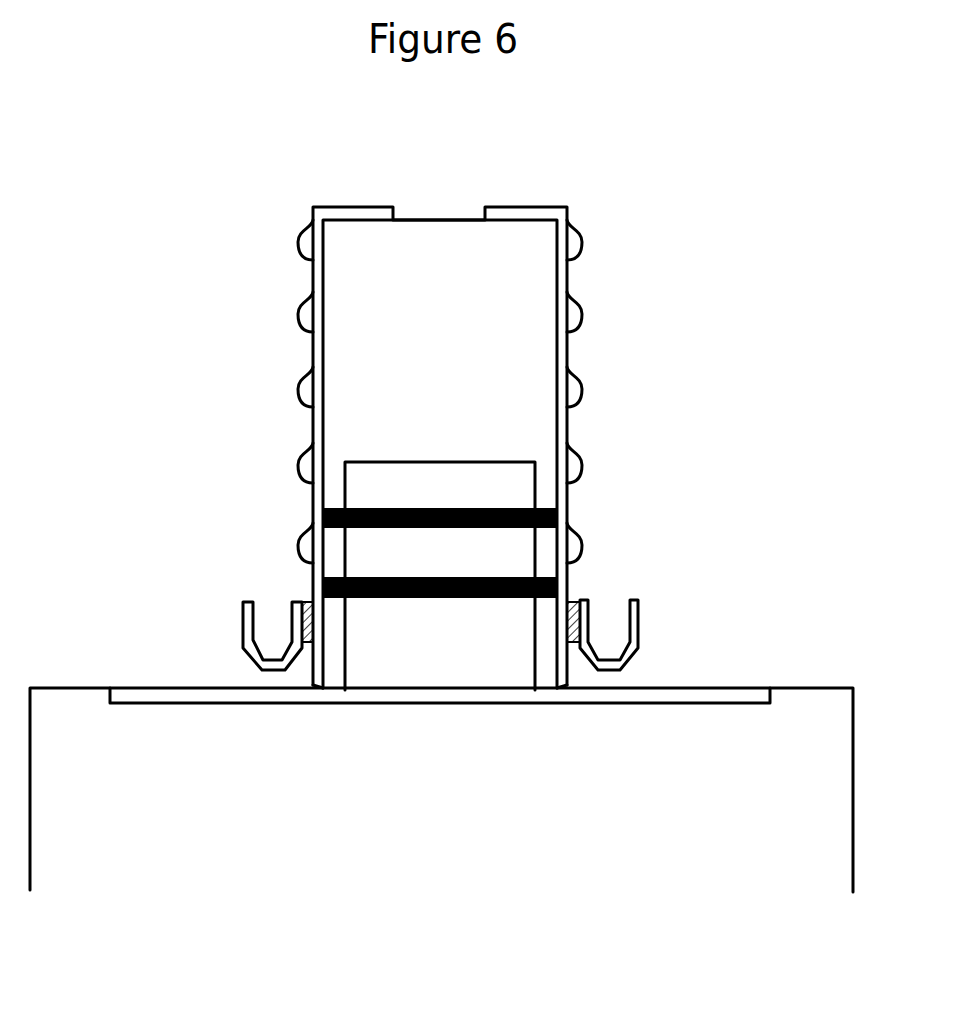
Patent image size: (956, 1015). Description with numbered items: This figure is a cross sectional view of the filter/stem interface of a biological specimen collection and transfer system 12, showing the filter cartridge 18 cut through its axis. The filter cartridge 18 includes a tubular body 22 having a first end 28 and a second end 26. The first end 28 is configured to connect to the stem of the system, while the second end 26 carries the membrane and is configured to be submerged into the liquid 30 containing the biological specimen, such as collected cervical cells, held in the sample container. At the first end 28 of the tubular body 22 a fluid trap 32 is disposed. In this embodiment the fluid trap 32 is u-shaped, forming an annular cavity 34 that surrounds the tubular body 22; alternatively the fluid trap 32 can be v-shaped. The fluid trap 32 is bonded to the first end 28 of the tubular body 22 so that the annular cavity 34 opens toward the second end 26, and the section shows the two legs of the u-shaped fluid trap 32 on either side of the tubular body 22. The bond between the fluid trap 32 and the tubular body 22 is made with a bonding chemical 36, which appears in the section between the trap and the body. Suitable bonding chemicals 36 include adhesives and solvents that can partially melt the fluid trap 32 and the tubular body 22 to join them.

The biological specimen collection and transfer system 12 is at (405, 918).
The filter cartridge 18 is at (565, 348).
The tubular body 22 is at (323, 423).
The second end 26 is at (262, 257).
The first end 28 is at (220, 658).
The liquid 30 is at (580, 392).
The fluid trap 32 is at (630, 633).
The annular cavity 34 is at (273, 628).
The bonding chemical 36 is at (582, 602).